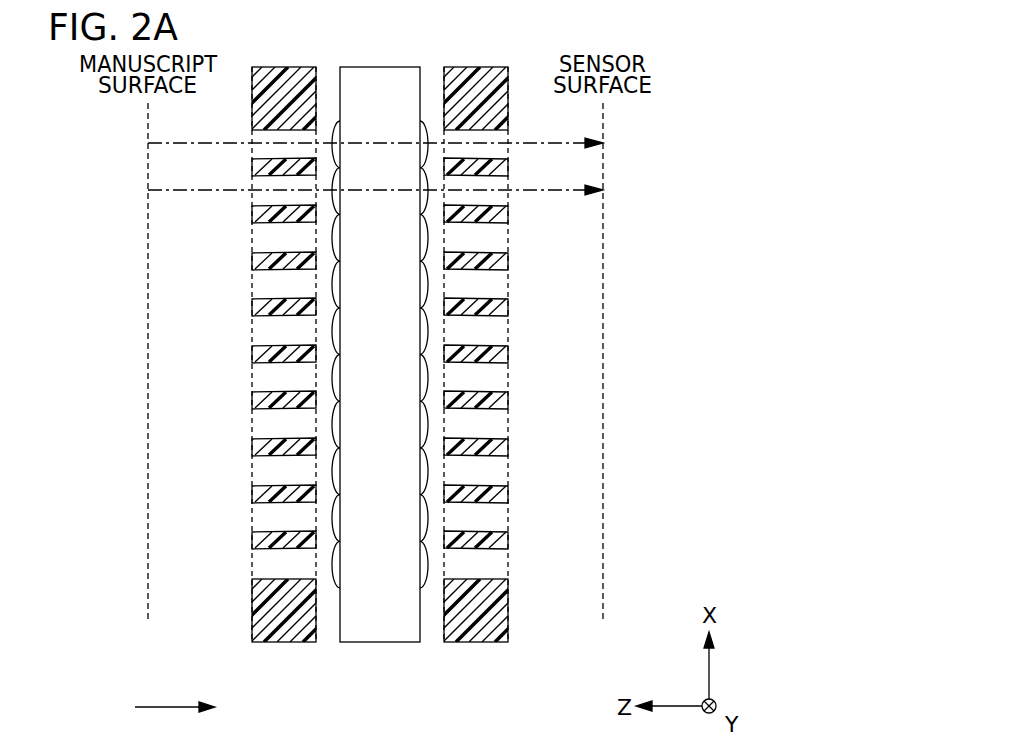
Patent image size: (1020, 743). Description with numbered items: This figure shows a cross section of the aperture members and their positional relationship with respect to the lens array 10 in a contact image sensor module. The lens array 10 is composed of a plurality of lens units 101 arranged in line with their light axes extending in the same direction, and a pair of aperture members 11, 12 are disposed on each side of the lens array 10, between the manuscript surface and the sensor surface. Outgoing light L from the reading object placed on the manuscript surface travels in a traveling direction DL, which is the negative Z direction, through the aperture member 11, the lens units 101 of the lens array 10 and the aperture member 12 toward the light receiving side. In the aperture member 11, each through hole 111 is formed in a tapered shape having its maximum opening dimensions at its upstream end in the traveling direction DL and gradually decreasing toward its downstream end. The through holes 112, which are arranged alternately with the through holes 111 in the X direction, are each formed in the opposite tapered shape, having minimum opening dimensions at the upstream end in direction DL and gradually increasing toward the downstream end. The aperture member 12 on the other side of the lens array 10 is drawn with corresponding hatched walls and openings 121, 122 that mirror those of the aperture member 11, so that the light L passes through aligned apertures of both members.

The lens array 10 is at (391, 393).
The lens unit 101 is at (425, 580).
The aperture member 11 is at (276, 393).
The through hole 111 is at (249, 129).
The through hole 112 is at (266, 207).
The aperture member 12 is at (481, 393).
The third light shielding plate 121 is at (496, 126).
The fourth light shielding plate 122 is at (494, 207).
The outgoing light L is at (192, 143).
The traveling direction DL is at (175, 696).